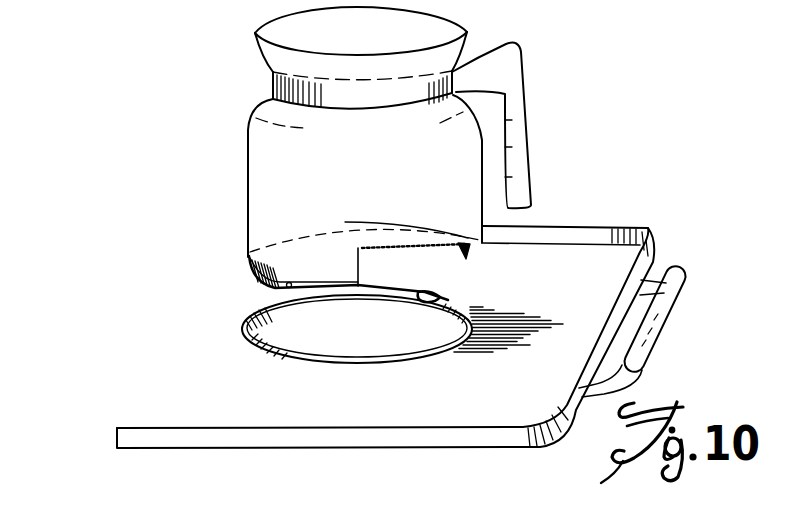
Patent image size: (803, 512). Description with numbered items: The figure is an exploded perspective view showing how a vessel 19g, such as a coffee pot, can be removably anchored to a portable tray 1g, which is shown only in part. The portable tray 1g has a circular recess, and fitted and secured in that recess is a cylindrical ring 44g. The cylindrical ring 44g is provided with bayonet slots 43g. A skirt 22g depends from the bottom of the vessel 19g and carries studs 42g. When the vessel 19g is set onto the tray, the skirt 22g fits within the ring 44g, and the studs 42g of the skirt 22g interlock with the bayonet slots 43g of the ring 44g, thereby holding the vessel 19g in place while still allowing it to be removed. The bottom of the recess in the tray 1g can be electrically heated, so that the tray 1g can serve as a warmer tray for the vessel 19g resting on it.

The portable tray 1g is at (240, 245).
The vessel 19g is at (257, 217).
The skirt 22g is at (247, 283).
The studs 42g is at (307, 282).
The bayonet slots 43g is at (270, 313).
The cylindrical ring 44g is at (391, 297).